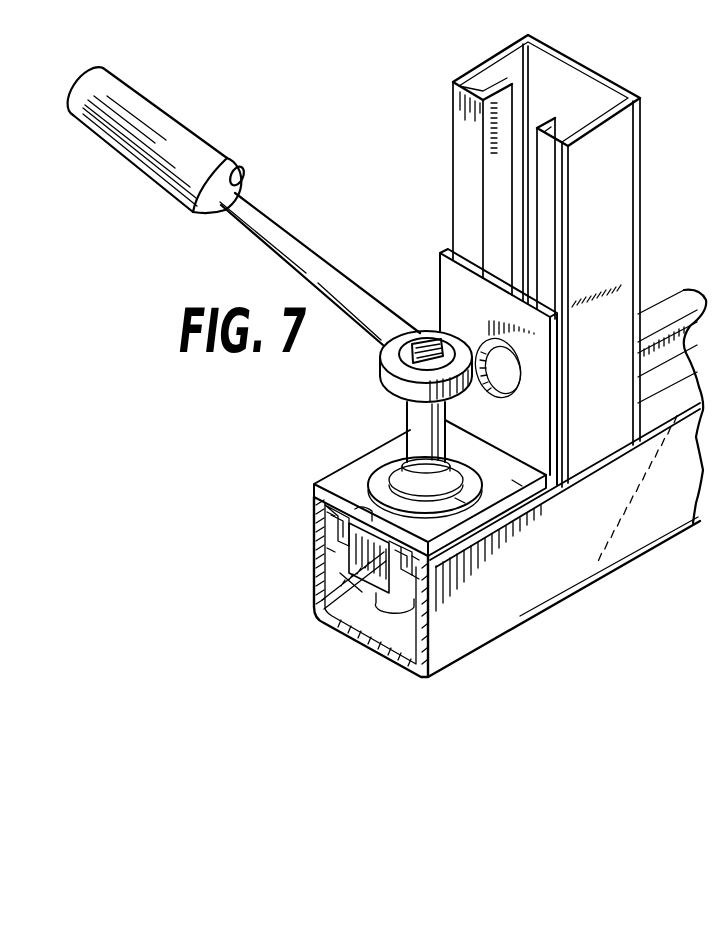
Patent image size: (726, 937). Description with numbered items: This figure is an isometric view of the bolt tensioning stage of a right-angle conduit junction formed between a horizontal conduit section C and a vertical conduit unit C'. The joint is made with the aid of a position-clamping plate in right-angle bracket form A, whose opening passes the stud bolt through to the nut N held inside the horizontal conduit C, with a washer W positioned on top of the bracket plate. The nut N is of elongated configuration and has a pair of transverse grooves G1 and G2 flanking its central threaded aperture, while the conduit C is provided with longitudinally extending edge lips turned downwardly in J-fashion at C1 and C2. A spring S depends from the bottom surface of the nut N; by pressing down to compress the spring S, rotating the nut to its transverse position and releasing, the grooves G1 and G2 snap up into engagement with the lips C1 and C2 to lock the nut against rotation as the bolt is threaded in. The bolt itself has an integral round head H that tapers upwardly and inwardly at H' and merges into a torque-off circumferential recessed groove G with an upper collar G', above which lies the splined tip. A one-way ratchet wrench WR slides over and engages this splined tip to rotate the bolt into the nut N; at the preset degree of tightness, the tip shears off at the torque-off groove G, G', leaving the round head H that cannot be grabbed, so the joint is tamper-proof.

The ratchet wrench WR is at (191, 153).
The vertical conduit unit C' is at (566, 261).
The conduit section C is at (510, 483).
The position-clamping plate A is at (378, 463).
The washer W is at (367, 482).
The torque-off circumferential recessed groove G is at (435, 480).
The upper collar G' is at (447, 455).
The round head H is at (488, 526).
The tapering portion of head H' is at (539, 500).
The conduit lip C1 is at (428, 573).
The conduit lip C2 is at (317, 529).
The transverse groove G1 is at (430, 578).
The transverse groove G2 is at (318, 541).
The nut N is at (318, 606).
The spring S is at (370, 612).